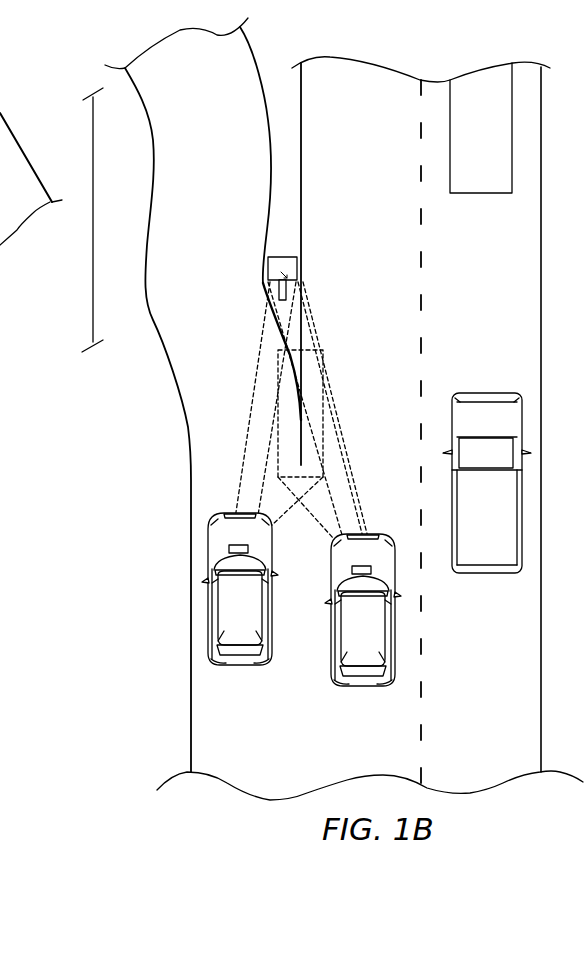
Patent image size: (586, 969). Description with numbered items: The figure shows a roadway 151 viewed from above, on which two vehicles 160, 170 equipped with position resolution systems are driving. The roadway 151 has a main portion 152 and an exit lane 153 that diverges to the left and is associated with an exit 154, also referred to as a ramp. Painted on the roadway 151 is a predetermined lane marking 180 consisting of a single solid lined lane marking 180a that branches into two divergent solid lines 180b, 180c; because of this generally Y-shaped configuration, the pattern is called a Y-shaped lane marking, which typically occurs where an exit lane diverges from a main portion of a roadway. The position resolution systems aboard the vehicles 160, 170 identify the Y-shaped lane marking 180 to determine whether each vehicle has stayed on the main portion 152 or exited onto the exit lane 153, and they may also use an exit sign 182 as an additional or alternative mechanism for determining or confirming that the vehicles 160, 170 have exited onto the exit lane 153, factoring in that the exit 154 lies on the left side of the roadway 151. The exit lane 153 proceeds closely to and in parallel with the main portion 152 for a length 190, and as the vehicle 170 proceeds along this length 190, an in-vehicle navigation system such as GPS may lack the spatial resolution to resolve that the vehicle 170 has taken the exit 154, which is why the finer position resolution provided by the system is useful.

The roadway 151 is at (445, 778).
The main portion 152 is at (525, 235).
The exit lane 153 is at (183, 360).
The exit 154 is at (287, 150).
The vehicle 160 is at (362, 677).
The vehicle 170 is at (242, 660).
The predetermined lane marking 180 is at (323, 410).
The single solid lined lane marking 180a is at (302, 457).
The divergent solid line 180b is at (283, 370).
The divergent solid line 180c is at (283, 370).
The exit sign 182 is at (283, 257).
The length 190 is at (93, 243).